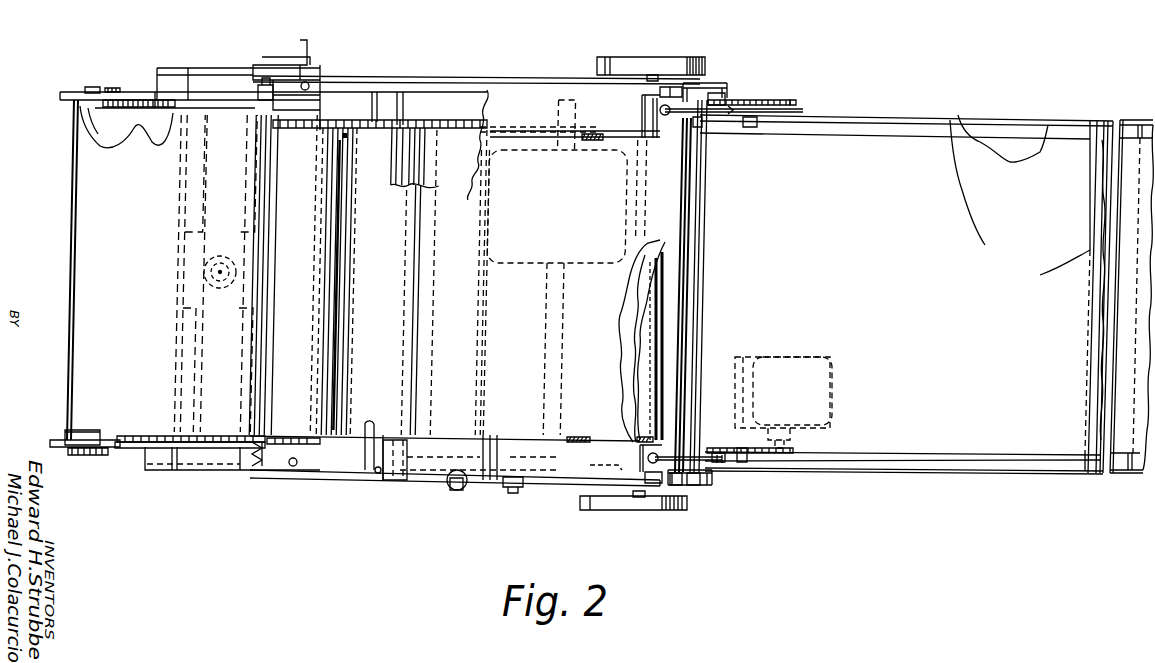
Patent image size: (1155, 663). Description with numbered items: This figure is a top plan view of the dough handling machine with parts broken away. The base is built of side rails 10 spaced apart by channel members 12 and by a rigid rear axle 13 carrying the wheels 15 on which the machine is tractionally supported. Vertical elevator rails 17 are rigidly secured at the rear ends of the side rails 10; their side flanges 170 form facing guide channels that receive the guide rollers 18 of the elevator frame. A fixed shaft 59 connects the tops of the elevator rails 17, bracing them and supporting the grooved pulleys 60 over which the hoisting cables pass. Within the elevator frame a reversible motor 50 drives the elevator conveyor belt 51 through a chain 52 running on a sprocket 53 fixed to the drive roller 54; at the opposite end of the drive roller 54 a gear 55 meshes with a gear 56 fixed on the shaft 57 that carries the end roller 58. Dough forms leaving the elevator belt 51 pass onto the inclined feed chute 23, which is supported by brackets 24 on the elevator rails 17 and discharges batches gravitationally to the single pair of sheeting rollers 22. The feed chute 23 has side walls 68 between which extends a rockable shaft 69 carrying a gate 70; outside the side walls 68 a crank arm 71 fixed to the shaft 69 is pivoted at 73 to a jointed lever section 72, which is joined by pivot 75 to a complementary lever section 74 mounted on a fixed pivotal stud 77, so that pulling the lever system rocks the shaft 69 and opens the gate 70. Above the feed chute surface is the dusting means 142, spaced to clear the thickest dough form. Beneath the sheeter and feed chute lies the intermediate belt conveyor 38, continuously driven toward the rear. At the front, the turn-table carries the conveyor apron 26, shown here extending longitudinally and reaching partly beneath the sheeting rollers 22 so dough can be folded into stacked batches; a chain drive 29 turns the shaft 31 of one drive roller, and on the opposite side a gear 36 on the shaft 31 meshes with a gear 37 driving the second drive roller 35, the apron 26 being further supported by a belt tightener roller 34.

The side rails 10 is at (530, 80).
The channel members 12 is at (172, 470).
The rigid axle 13 is at (652, 76).
The wheels 15 is at (628, 66).
The vertical elevator rails 17 is at (707, 86).
The guide rollers 18 is at (692, 486).
The sheeting rollers 22 is at (318, 152).
The inclined feed chute 23 is at (498, 150).
The brackets 24 is at (660, 91).
The conveyor apron 26 is at (98, 178).
The chain drive 29 is at (155, 448).
The shaft 31 is at (155, 100).
The belt tightener roller 34 is at (68, 443).
The drive roller 35 is at (85, 432).
The gear 36 is at (157, 97).
The gear 37 is at (103, 90).
The intermediate belt conveyor 38 is at (652, 300).
The reversible motor 50 is at (835, 381).
The elevator conveyor belt 51 is at (950, 140).
The chain 52 is at (770, 454).
The sprocket 53 is at (743, 462).
The drive roller 54 is at (765, 119).
The gear 55 is at (780, 102).
The gear 56 is at (725, 102).
The shaft 57 is at (722, 126).
The end roller 58 is at (712, 123).
The fixed shaft 59 is at (700, 332).
The grooved pulleys 60 is at (728, 113).
The side walls 68 is at (530, 133).
The rockable shaft 69 is at (420, 245).
The gate 70 is at (398, 152).
The crank arm 71 is at (378, 474).
The lever section 72 is at (395, 480).
The pivot 73 is at (385, 482).
The complementary lever section 74 is at (513, 487).
The pivot 75 is at (448, 484).
The fixed pivotal stud 77 is at (482, 455).
The dusting means 142 is at (592, 135).
The side flanges 170 is at (720, 98).